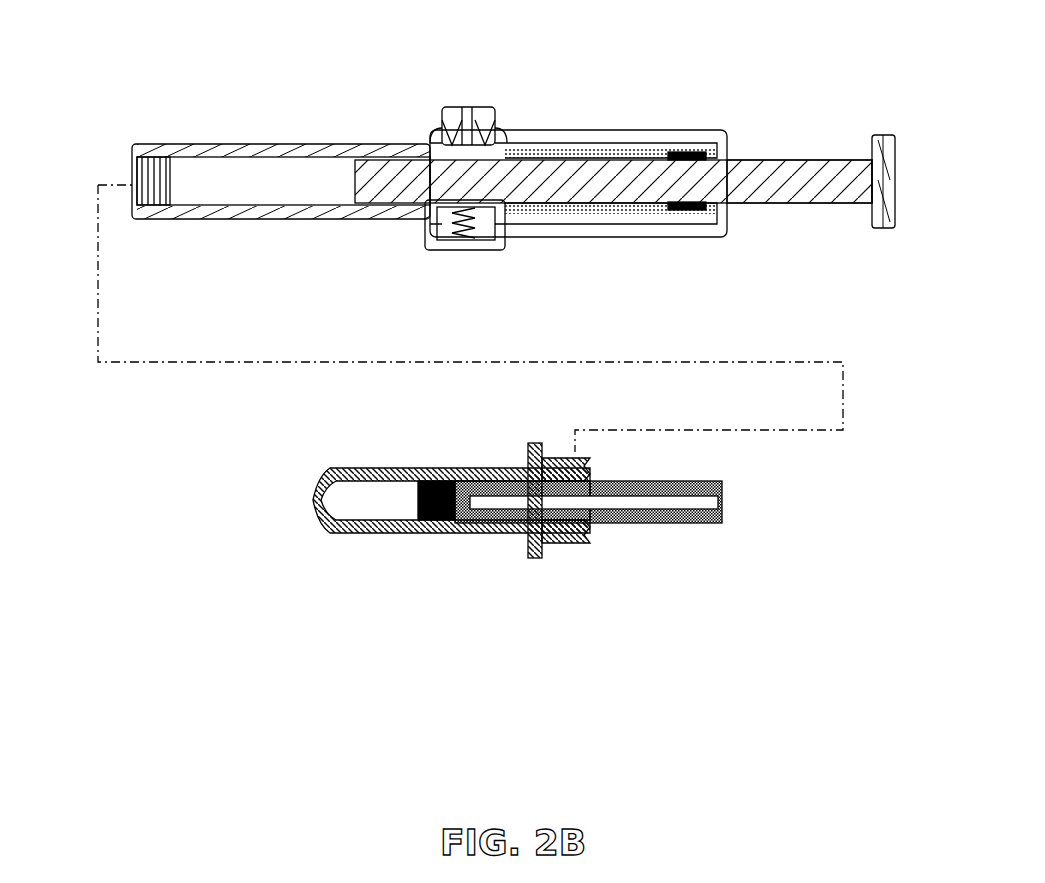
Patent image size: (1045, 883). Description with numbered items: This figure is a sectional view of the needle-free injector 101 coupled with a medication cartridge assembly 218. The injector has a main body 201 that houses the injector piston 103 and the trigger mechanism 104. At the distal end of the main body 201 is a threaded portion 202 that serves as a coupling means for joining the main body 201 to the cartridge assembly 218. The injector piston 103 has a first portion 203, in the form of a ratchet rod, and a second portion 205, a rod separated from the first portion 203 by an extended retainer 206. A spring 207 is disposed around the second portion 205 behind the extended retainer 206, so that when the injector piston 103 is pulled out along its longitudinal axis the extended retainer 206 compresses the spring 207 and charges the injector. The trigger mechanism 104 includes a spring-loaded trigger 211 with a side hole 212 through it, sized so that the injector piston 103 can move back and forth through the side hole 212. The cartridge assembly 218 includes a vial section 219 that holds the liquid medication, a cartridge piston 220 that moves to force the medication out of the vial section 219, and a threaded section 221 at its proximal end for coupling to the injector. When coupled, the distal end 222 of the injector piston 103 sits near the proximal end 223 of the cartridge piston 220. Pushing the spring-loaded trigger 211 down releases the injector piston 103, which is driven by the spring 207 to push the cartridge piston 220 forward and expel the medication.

The needle-free injector 101 is at (214, 106).
The injector piston 103 is at (801, 234).
The trigger mechanism 104 is at (434, 98).
The main body 201 is at (267, 220).
The threaded portion 202 is at (150, 170).
The first portion 203 is at (372, 176).
The second portion 205 is at (806, 158).
The extended retainer 206 is at (662, 158).
The spring 207 is at (688, 160).
The spring-loaded trigger 211 is at (430, 225).
The side hole 212 is at (457, 151).
The medication cartridge assembly 218 is at (386, 567).
The vial section 219 is at (369, 495).
The cartridge piston 220 is at (646, 545).
The threaded section 221 is at (566, 546).
The distal end 222 is at (353, 178).
The proximal end 223 is at (722, 505).